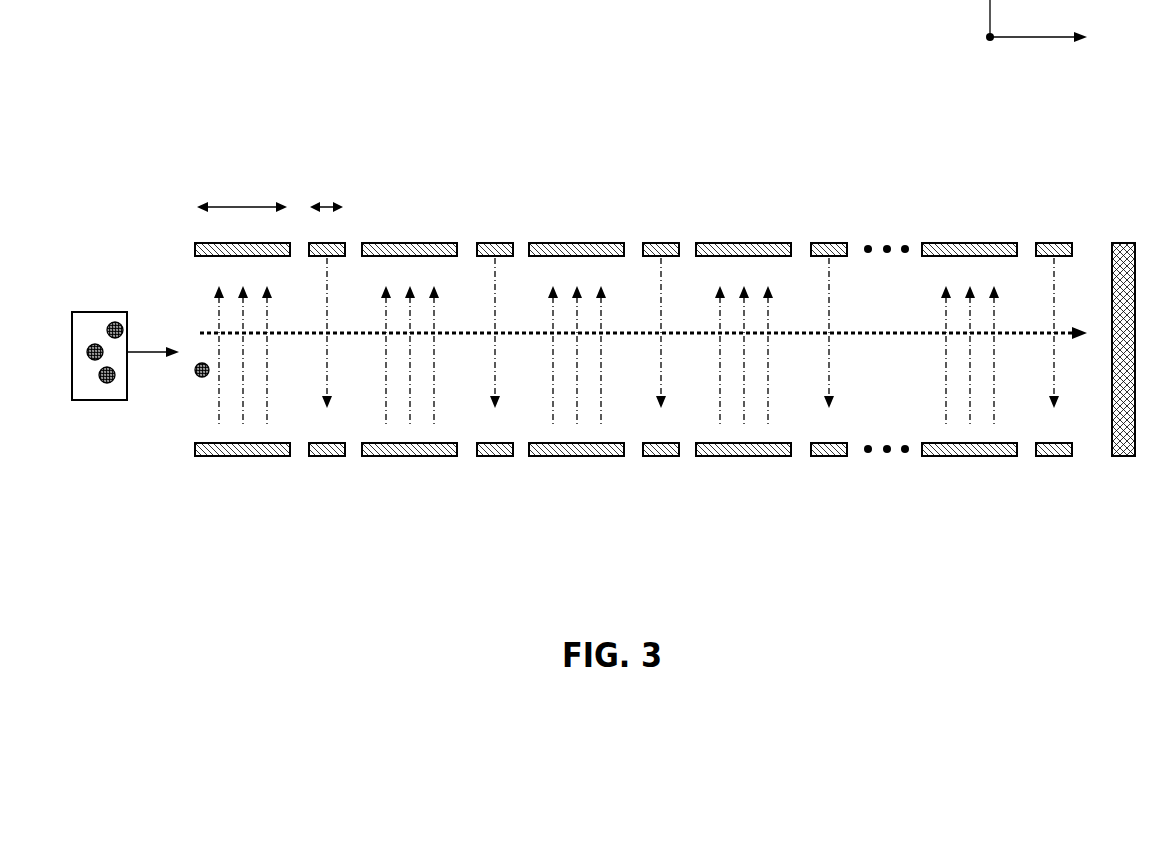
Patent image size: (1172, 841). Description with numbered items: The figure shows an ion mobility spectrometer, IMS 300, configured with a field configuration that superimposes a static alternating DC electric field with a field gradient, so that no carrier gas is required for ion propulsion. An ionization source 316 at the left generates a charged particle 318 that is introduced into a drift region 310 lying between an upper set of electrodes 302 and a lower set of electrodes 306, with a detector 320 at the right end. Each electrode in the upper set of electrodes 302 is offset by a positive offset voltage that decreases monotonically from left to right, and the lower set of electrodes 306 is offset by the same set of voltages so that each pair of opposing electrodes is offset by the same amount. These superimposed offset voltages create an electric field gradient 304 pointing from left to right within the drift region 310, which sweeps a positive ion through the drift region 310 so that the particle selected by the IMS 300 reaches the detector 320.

The IMS 300 is at (653, 37).
The upper set of electrodes 302 is at (1070, 186).
The electric field gradient 304 is at (843, 334).
The lower set of electrodes 306 is at (193, 490).
The drift region 310 is at (893, 305).
The ionization source 316 is at (90, 335).
The charged particle 318 is at (196, 377).
The detector 320 is at (1127, 457).